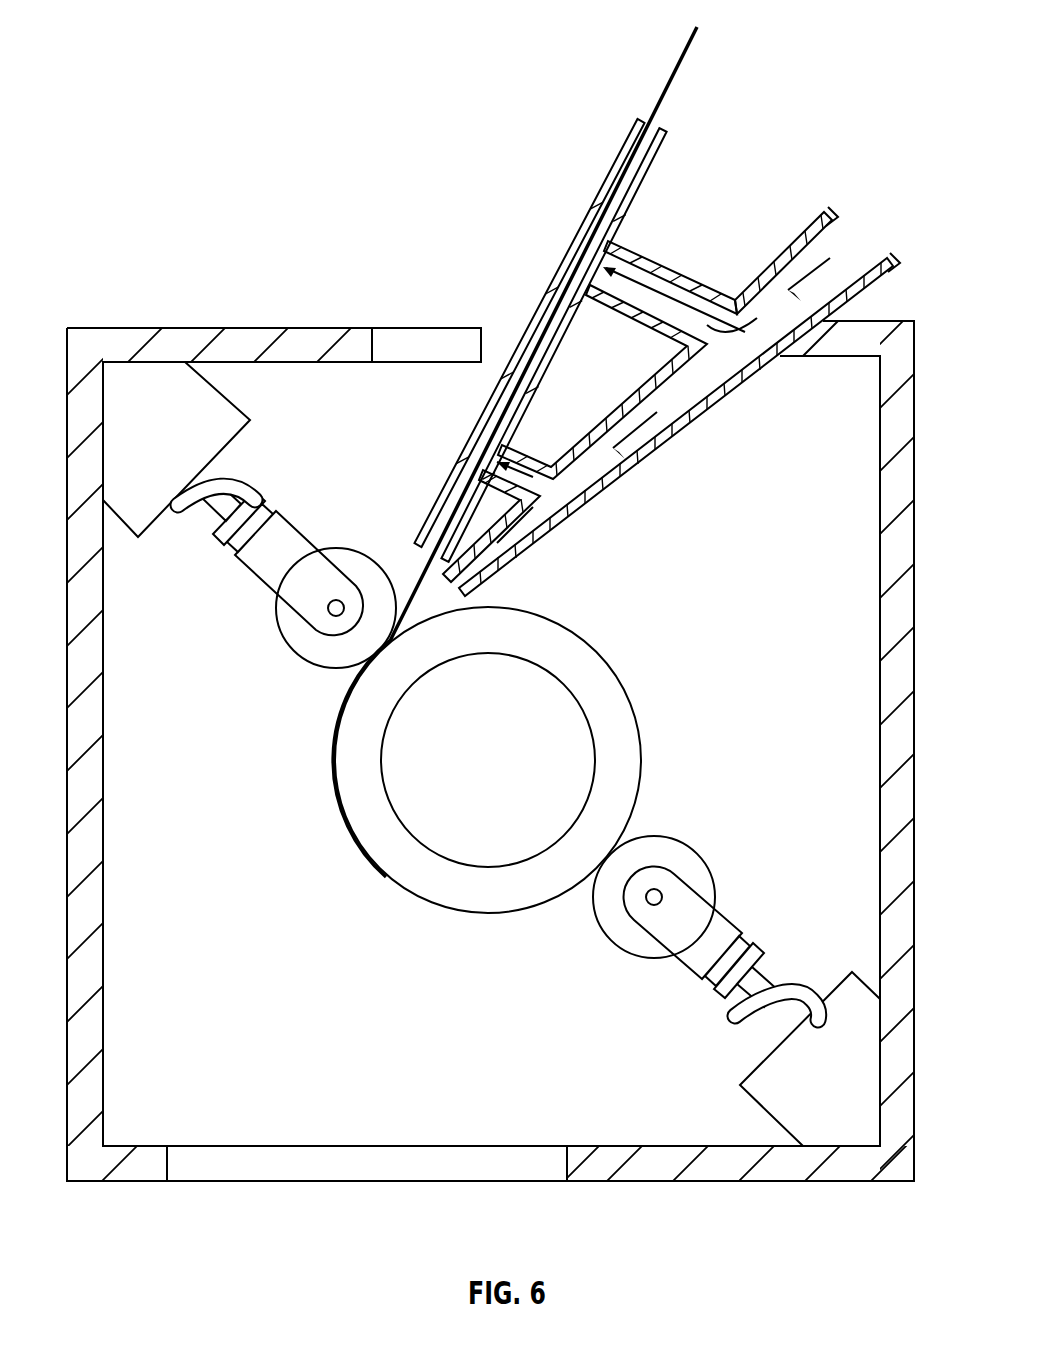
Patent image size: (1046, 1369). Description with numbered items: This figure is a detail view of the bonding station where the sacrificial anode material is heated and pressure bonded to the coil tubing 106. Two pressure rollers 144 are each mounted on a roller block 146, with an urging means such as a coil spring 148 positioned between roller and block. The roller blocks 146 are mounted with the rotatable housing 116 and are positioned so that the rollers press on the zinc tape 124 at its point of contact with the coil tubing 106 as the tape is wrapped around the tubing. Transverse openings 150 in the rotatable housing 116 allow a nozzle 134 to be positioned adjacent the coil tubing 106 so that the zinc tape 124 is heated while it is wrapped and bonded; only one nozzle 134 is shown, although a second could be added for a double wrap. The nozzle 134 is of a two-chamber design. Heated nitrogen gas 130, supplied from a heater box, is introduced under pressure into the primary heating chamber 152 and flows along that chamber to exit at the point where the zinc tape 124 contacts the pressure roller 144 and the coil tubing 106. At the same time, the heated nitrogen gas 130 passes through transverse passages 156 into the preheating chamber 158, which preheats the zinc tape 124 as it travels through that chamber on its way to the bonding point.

The coil tubing 106 is at (640, 735).
The rotatable housing 116 is at (84, 328).
The zinc tape 124 is at (664, 97).
The heated nitrogen gas 130 is at (856, 270).
The nozzle 134 is at (664, 258).
The pressure roller 144 is at (277, 633).
The roller block 146 is at (240, 405).
The coil spring 148 is at (237, 480).
The transverse opening 150 is at (483, 342).
The primary heating chamber 152 is at (822, 236).
The transverse passage 156 is at (543, 467).
The preheating chamber 158 is at (592, 246).